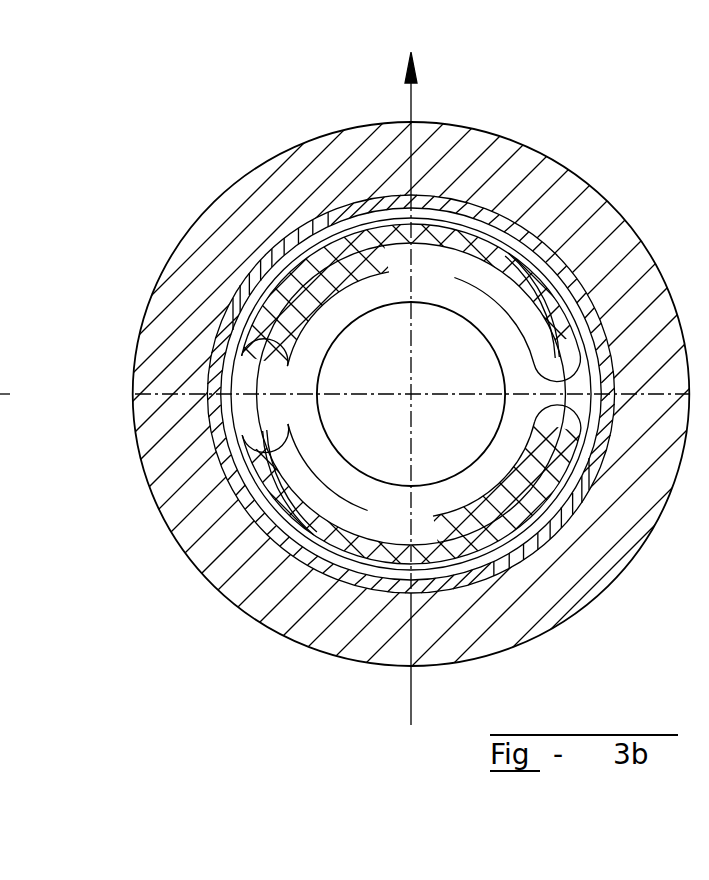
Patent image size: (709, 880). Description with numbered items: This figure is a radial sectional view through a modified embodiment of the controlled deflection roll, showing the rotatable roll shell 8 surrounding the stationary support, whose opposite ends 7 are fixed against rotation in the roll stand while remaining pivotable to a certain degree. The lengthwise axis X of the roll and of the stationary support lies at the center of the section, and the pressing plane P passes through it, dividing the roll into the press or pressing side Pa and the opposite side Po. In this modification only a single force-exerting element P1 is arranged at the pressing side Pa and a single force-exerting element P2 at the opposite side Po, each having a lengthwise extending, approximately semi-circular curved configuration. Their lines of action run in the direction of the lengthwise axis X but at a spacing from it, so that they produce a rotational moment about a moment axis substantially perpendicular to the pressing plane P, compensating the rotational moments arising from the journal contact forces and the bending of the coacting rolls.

The roll shell 8 is at (232, 574).
The opposite ends of the stationary support 7 is at (451, 359).
The force-exerting element P1 is at (517, 287).
The force-exerting element P2 is at (543, 513).
The pressing plane P is at (424, 65).
The pressing side Pa is at (75, 178).
The opposite side Po is at (81, 591).
The lengthwise axis X is at (441, 430).